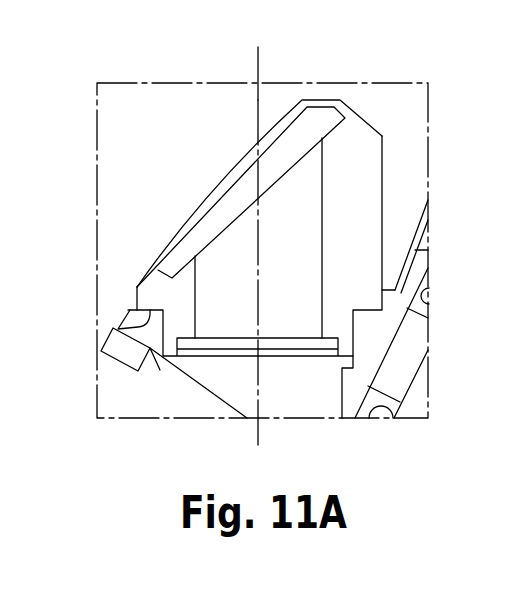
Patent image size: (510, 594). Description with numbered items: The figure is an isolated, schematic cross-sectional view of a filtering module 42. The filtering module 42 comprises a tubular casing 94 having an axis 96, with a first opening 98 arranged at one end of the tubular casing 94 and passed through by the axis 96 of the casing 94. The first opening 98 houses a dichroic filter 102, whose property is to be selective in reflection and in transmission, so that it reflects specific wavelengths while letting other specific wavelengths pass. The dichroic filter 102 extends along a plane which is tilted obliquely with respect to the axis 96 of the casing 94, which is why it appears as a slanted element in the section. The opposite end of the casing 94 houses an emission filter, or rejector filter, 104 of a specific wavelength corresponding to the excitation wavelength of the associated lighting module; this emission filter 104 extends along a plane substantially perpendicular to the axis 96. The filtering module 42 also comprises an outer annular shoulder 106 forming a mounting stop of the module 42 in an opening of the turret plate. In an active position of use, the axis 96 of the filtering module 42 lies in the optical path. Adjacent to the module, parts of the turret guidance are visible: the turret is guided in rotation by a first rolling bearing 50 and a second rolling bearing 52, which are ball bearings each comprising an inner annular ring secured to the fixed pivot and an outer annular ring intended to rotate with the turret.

The filtering module 42 is at (126, 246).
The first rolling bearing 50 is at (393, 445).
The second rolling bearing 52 is at (446, 290).
The tubular casing 94 is at (350, 193).
The axis 96 is at (259, 63).
The first opening 98 is at (213, 225).
The dichroic filter 102 is at (228, 175).
The emission filter 104 is at (213, 343).
The outer annular shoulder 106 is at (125, 322).